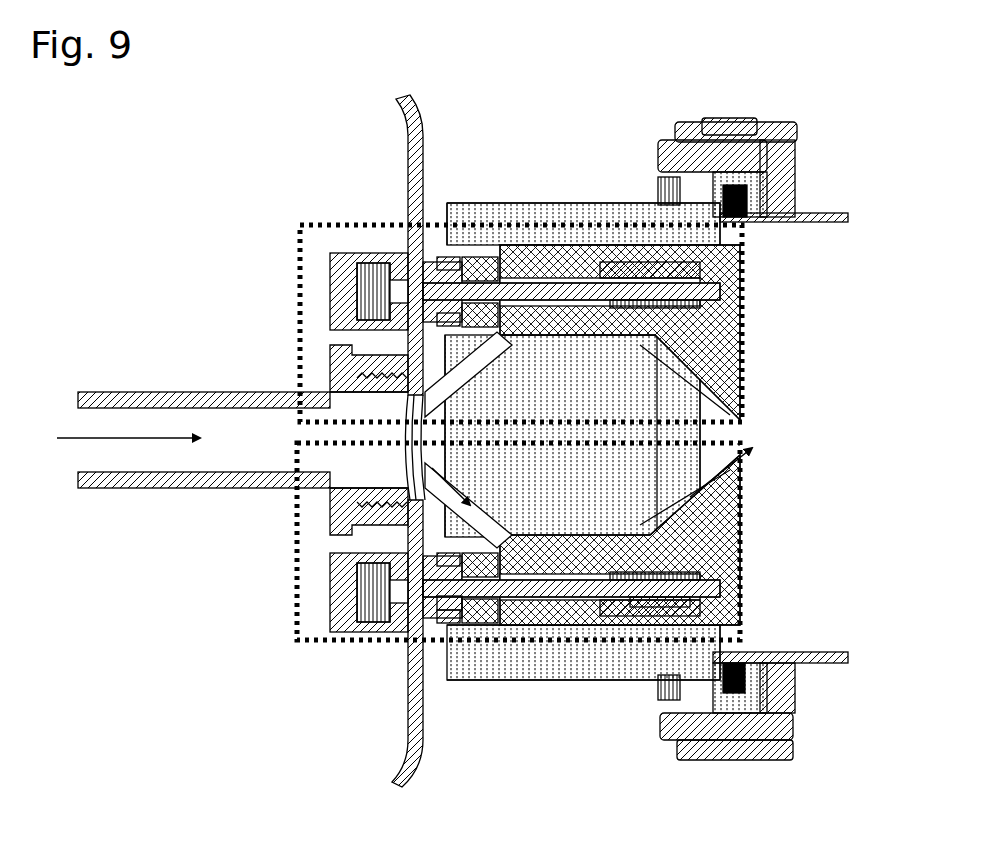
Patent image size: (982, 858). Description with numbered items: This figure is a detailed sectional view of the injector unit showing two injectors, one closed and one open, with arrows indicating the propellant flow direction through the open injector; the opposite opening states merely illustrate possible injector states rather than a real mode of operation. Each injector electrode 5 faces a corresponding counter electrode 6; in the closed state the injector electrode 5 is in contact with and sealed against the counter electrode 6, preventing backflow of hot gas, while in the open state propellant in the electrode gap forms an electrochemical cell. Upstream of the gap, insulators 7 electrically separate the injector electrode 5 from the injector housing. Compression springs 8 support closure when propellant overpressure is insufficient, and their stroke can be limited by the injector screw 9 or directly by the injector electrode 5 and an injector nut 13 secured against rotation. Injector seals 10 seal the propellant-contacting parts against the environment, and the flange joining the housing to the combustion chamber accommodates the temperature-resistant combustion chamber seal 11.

The injector electrode 5 is at (637, 320).
The counter electrode 6 is at (921, 390).
The insulator 7 is at (478, 257).
The compression spring 8 is at (650, 283).
The injector screw 9 is at (437, 278).
The injector seal 10 is at (478, 622).
The combustion chamber seal 11 is at (723, 187).
The injector nut 13 is at (663, 603).